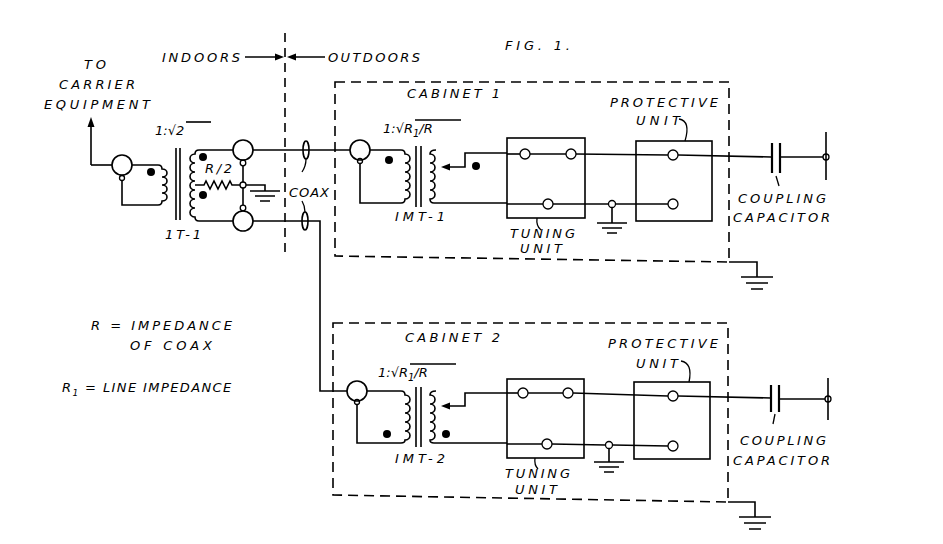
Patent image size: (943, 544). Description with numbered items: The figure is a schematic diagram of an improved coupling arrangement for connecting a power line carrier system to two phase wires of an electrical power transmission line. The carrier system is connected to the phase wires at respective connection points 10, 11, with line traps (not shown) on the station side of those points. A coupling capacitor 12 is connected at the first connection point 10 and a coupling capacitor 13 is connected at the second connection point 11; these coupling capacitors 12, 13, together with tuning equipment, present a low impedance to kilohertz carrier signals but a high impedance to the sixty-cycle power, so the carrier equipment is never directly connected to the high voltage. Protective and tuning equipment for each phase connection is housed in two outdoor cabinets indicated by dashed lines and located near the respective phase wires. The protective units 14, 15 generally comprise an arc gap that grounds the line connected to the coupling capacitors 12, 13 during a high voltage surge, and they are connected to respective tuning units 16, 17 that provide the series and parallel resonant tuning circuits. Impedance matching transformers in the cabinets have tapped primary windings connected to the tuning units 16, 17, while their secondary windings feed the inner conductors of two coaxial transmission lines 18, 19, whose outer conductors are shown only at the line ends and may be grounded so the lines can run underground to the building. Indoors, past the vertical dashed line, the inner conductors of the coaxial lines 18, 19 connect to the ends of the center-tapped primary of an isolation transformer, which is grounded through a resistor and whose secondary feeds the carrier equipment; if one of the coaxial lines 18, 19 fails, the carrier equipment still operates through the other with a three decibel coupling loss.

The connection point 10 is at (823, 156).
The connection point 11 is at (825, 398).
The coupling capacitor 12 is at (778, 142).
The coupling capacitor 13 is at (776, 384).
The protective unit 14 is at (674, 221).
The protective unit 15 is at (675, 459).
The tuning unit 16 is at (548, 138).
The tuning unit 17 is at (548, 379).
The coaxial transmission line 18 is at (318, 148).
The coaxial transmission line 19 is at (322, 285).